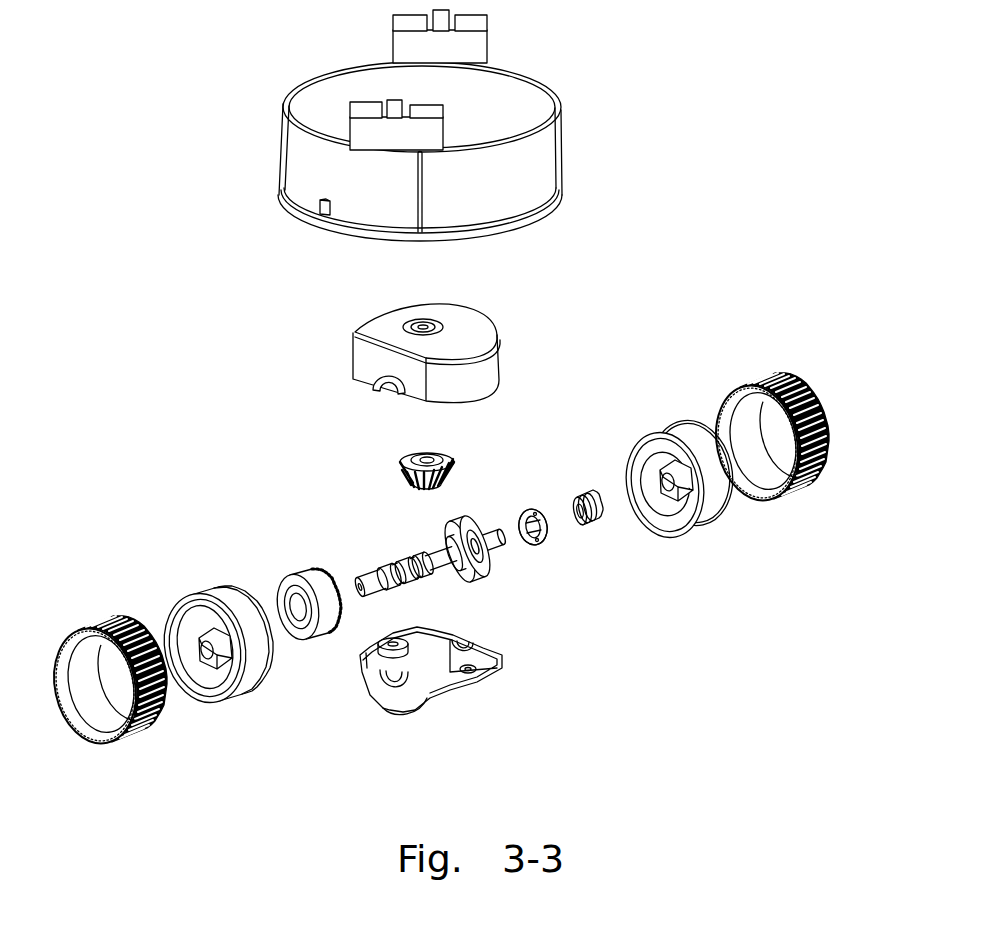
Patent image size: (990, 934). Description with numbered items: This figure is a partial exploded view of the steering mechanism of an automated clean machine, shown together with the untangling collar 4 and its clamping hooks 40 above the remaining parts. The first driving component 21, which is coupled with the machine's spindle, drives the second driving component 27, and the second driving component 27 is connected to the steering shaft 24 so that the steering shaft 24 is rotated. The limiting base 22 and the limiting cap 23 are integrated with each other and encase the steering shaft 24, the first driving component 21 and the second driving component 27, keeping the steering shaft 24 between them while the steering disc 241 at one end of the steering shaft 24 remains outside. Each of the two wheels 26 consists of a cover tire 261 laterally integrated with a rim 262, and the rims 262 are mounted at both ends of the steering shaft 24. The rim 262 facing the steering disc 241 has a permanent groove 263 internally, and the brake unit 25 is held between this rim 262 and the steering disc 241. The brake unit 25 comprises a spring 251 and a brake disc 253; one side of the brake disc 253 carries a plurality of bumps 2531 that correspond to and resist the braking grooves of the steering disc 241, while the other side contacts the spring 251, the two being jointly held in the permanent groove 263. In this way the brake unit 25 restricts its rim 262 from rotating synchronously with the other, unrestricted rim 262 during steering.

The untangling collar 4 is at (533, 162).
The clamping hooks 40 is at (360, 147).
The limiting base 22 is at (493, 360).
The first driving component 21 is at (400, 466).
The steering shaft 24 is at (417, 538).
The steering disc 241 is at (500, 565).
The brake unit 25 is at (587, 449).
The brake disc 253 is at (548, 535).
The bumps 2531 is at (528, 545).
The spring 251 is at (598, 517).
The wheels 26 is at (797, 358).
The cover tire 261 is at (840, 447).
The rim 262 is at (715, 495).
The permanent groove 263 is at (677, 493).
The second driving component 27 is at (325, 642).
The limiting cap 23 is at (502, 675).